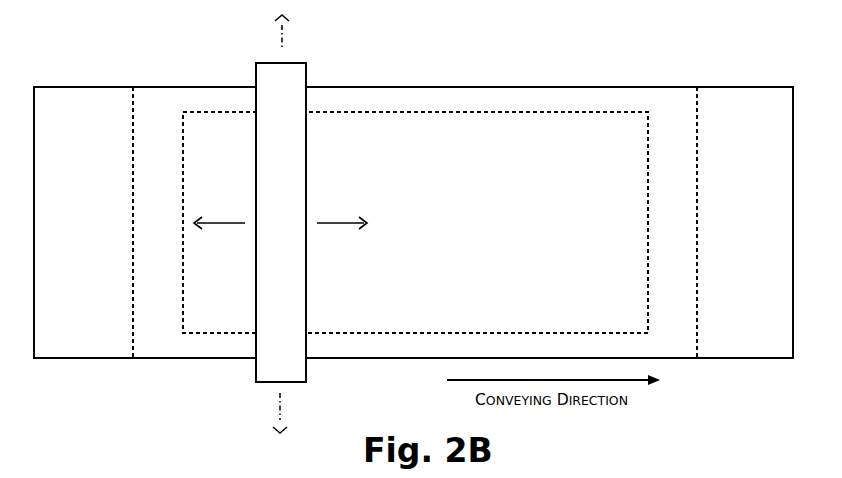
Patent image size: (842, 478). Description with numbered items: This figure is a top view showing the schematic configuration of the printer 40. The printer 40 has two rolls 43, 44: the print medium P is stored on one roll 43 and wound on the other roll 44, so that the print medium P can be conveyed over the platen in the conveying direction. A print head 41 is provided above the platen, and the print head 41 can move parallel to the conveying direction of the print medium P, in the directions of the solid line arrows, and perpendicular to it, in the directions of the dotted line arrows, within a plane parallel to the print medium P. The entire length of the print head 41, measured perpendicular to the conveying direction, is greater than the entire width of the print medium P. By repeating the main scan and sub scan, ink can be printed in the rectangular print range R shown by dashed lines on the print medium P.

The printer 40 is at (733, 36).
The print head 41 is at (306, 63).
The roll 43 is at (134, 110).
The roll 44 is at (697, 110).
The print range R is at (441, 110).
The print medium P is at (512, 87).